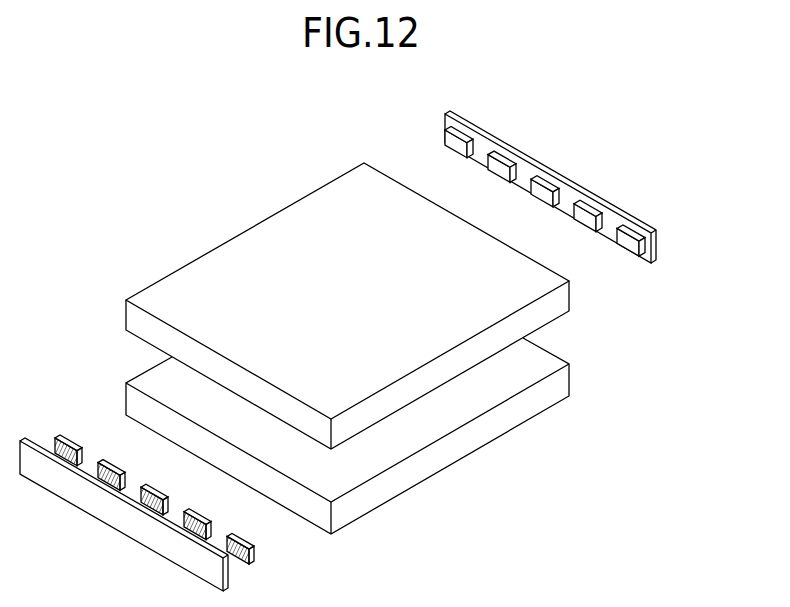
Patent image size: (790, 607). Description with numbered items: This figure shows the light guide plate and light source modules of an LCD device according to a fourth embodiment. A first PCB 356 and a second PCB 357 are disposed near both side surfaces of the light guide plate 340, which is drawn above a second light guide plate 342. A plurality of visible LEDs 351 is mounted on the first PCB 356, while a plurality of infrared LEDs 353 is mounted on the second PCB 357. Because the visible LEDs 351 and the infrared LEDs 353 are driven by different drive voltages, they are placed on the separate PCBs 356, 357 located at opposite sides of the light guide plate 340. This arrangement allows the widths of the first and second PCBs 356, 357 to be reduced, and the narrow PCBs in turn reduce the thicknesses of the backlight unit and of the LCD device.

The light guide plate 340 is at (137, 319).
The second light guide plate 342 is at (555, 384).
The visible LED 351 is at (635, 247).
The first PCB 356 is at (618, 213).
The second PCB 357 is at (228, 575).
The infrared LED 353 is at (254, 557).